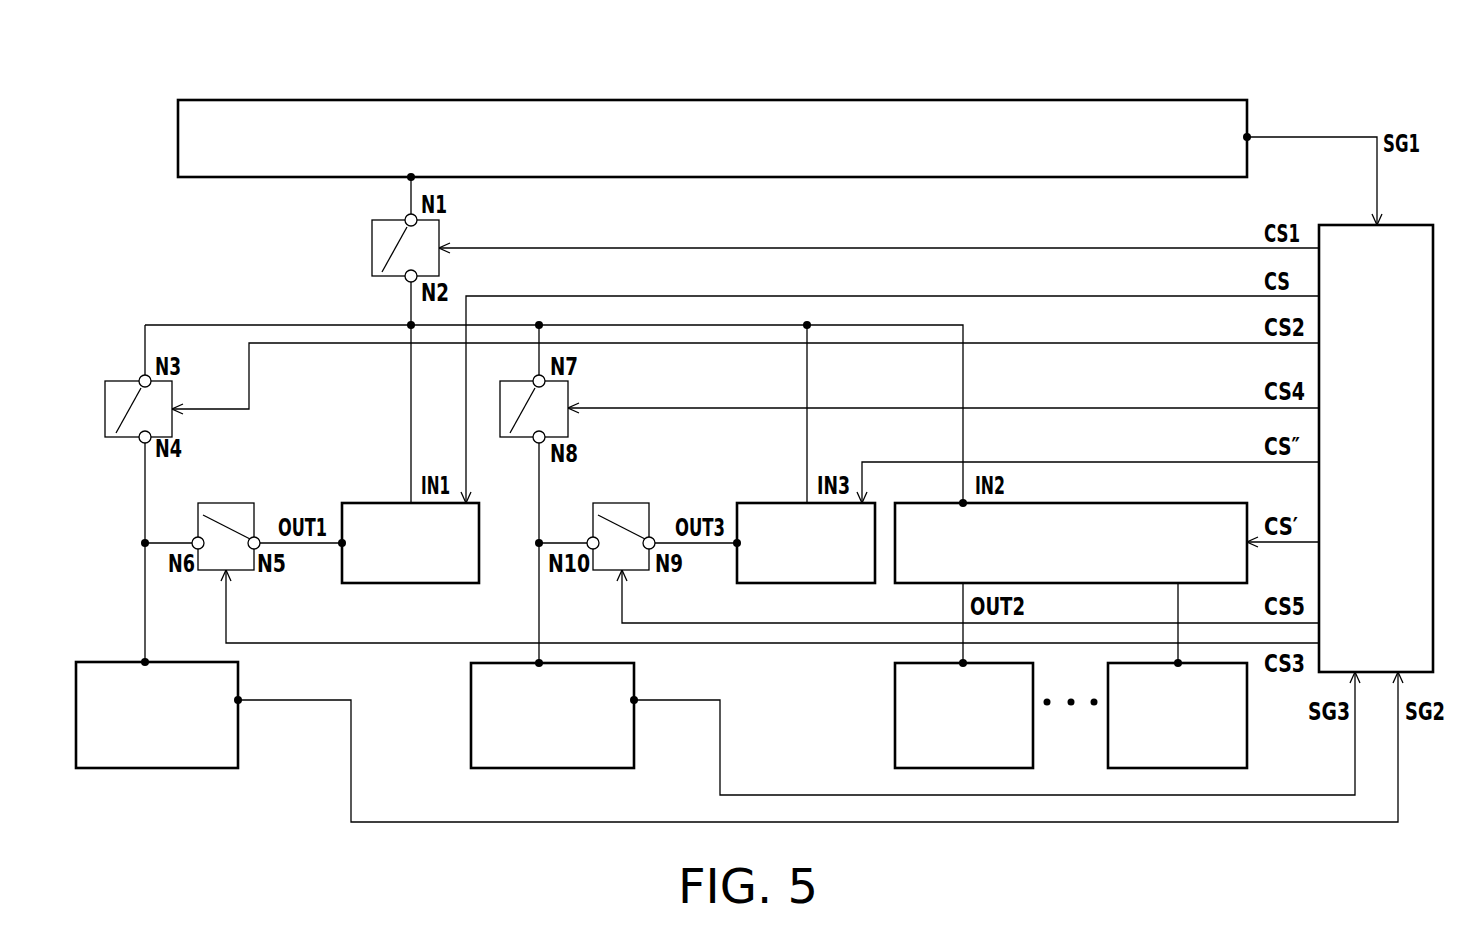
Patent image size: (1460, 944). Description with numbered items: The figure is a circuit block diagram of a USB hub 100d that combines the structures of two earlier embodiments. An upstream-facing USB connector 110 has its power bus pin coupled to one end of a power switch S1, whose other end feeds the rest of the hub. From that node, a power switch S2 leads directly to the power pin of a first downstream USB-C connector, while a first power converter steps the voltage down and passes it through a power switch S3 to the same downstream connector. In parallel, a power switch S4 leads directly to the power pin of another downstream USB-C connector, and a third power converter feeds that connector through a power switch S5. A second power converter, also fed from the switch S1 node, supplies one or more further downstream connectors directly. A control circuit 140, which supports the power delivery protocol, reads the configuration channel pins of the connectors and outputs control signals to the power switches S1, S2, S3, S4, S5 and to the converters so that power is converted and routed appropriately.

The USB hub 100d is at (1216, 76).
The USB connector 110 is at (1024, 100).
The control circuit 140 is at (1405, 225).
The power switch S1 is at (390, 248).
The power switch S2 is at (124, 409).
The power switch S3 is at (226, 522).
The power switch S4 is at (520, 409).
The power switch S5 is at (621, 522).